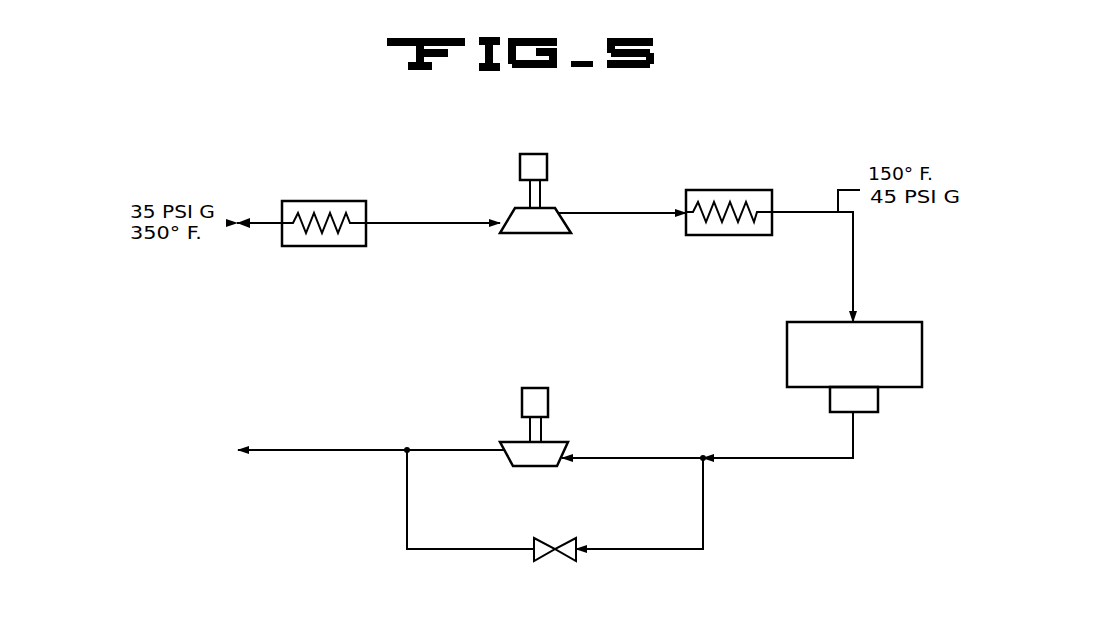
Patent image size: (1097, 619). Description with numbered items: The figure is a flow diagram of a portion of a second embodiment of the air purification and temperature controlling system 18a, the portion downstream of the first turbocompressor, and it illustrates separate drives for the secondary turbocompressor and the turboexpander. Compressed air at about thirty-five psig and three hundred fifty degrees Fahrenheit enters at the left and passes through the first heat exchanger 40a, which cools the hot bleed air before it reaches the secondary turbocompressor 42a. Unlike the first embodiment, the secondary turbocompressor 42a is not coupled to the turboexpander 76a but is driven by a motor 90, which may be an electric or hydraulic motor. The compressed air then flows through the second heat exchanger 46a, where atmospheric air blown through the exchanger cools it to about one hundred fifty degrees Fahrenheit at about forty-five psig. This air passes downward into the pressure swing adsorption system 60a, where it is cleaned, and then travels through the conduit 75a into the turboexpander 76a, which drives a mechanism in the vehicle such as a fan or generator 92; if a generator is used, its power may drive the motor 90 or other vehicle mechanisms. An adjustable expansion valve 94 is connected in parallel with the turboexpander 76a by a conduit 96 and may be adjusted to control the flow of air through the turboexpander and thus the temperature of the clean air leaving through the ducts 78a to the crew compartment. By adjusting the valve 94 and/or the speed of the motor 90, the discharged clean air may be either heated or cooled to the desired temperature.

The air purification and temperature controlling system 18a is at (608, 162).
The first heat exchanger 40a is at (356, 247).
The secondary turbocompressor 42a is at (554, 234).
The second heat exchanger 46a is at (757, 234).
The pressure swing adsorption system 60a is at (790, 348).
The conduit 75a is at (682, 457).
The turboexpander 76a is at (543, 466).
The ducts 78a is at (295, 449).
The motor 90 is at (536, 153).
The generator 92 is at (536, 388).
The adjustable expansion valve 94 is at (550, 562).
The conduit 96 is at (407, 507).